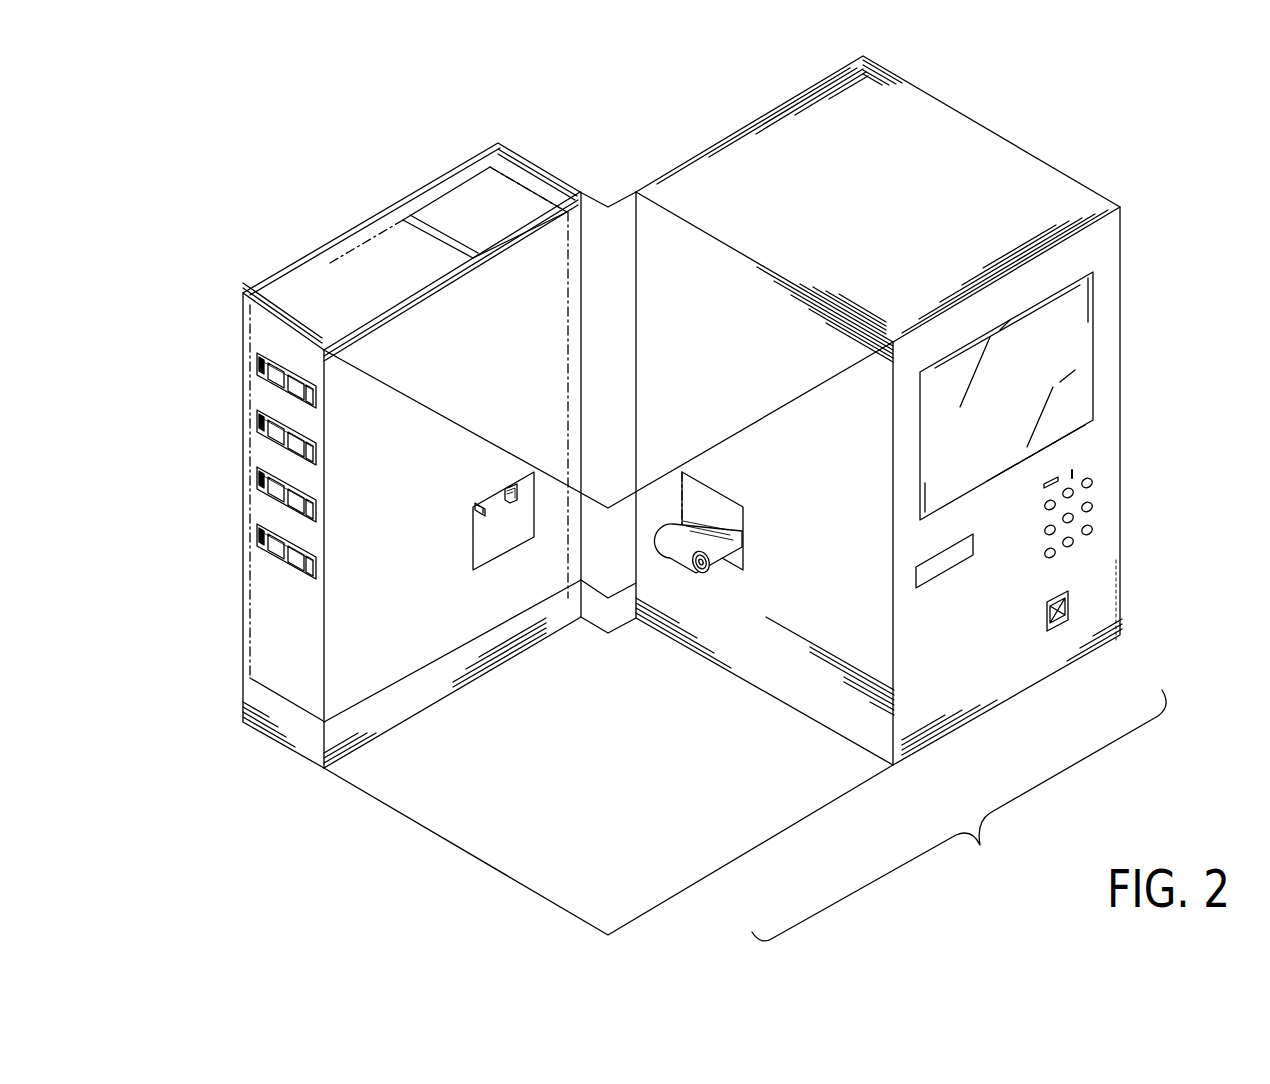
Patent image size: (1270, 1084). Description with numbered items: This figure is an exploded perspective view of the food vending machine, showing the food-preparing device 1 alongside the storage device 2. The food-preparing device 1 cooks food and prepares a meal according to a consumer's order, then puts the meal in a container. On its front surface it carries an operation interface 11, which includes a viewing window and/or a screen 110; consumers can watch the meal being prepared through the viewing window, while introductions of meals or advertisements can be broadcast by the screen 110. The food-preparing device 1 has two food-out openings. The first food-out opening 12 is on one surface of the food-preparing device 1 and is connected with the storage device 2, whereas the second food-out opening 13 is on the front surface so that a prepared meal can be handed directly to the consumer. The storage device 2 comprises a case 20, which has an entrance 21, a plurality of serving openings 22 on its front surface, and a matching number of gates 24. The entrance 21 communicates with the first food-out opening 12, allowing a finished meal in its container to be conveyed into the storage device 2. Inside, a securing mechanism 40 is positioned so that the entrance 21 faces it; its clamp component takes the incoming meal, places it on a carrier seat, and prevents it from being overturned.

The food-preparing device 1 is at (1029, 139).
The storage device 2 is at (356, 193).
The operation interface 11 is at (1028, 605).
The first food-out opening 12 is at (717, 488).
The second food-out opening 13 is at (946, 576).
The case 20 is at (533, 172).
The entrance 21 is at (474, 546).
The serving opening 22 is at (288, 562).
The gate 24 is at (260, 535).
The securing mechanism 40 is at (505, 490).
The screen 110 is at (1085, 353).